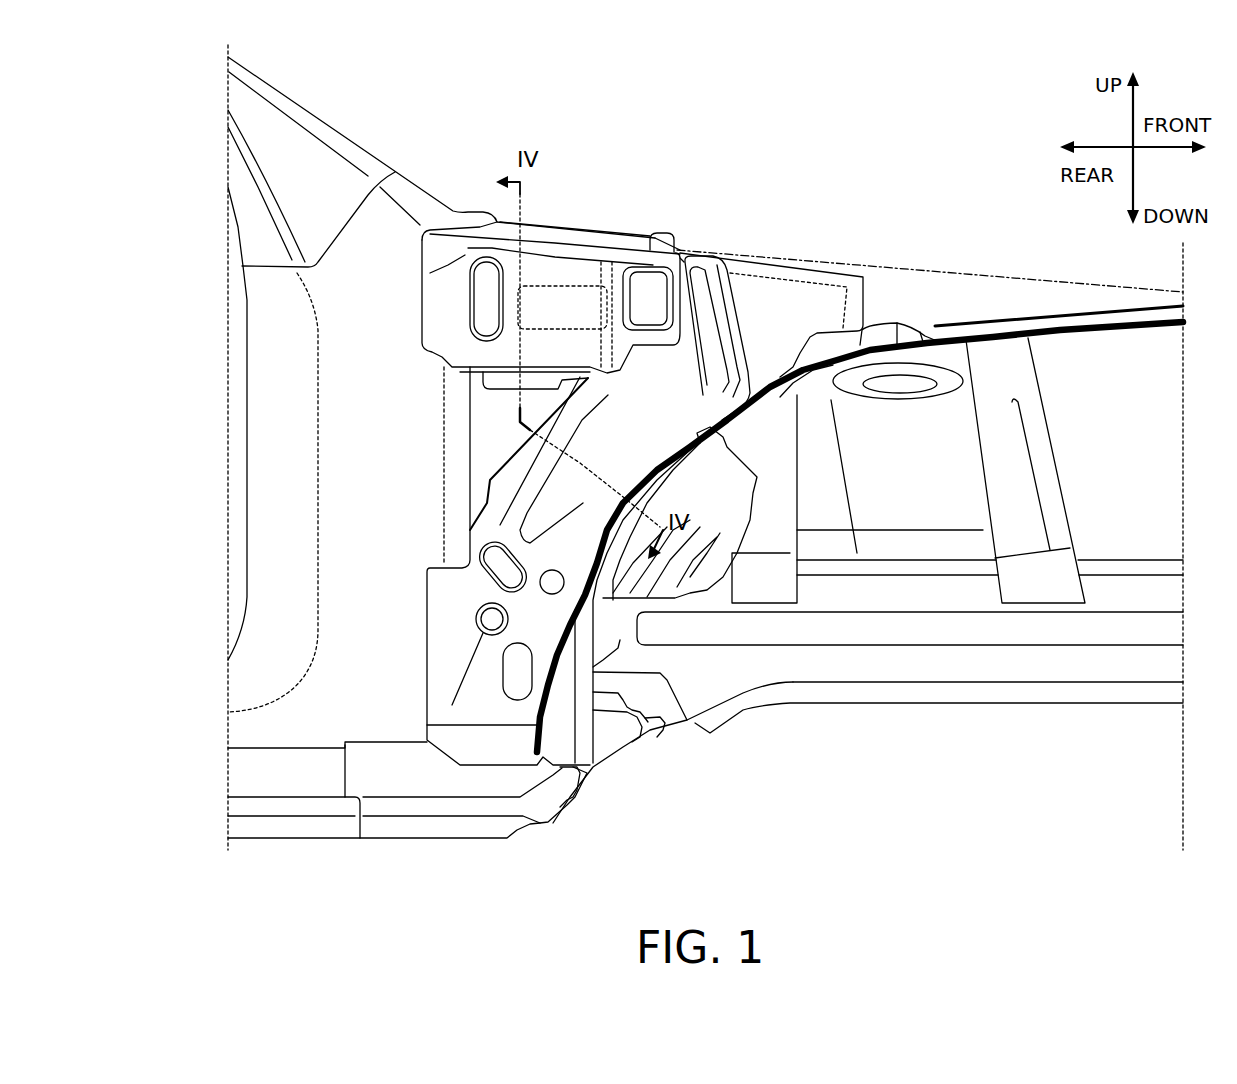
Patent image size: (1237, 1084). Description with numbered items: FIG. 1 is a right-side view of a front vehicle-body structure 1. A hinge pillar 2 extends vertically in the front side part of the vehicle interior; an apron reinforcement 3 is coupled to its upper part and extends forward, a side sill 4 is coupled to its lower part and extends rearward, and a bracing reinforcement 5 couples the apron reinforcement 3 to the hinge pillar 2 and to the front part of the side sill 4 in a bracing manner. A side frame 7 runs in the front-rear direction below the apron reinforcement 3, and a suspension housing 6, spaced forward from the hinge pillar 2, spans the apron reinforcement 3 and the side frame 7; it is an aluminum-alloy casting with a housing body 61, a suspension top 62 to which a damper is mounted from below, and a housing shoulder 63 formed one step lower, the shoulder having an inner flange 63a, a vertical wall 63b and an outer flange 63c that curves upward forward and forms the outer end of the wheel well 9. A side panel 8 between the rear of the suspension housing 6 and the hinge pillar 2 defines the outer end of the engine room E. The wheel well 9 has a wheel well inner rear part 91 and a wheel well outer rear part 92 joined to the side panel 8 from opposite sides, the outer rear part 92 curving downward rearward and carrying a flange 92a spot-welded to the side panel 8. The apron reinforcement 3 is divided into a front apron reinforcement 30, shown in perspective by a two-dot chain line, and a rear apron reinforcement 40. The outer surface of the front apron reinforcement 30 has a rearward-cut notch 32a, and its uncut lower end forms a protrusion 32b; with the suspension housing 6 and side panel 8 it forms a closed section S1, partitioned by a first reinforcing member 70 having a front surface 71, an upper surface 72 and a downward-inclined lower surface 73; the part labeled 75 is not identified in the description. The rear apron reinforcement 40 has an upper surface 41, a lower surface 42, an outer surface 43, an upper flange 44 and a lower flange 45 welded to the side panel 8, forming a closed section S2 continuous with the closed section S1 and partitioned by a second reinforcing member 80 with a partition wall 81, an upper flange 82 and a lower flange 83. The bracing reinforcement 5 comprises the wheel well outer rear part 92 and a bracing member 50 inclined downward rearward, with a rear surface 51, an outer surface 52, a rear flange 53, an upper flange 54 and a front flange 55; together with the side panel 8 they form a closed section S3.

The front vehicle-body structure 1 is at (795, 191).
The hinge pillar 2 is at (262, 603).
The apron reinforcement 3 is at (767, 181).
The side sill 4 is at (300, 822).
The bracing reinforcement 5 is at (378, 472).
The suspension housing 6 is at (1048, 445).
The side frame 7 is at (967, 660).
The side panel 8 is at (817, 293).
The wheel well 9 is at (913, 596).
The front apron reinforcement 30 is at (787, 263).
The notch 32a is at (703, 368).
The protrusion 32b is at (710, 407).
The rear apron reinforcement 40 is at (650, 240).
The upper surface 41 is at (540, 240).
The lower surface 42 is at (500, 373).
The outer surface 43 is at (448, 288).
The upper flange 44 is at (645, 233).
The lower flange 45 is at (497, 370).
The bracing member 50 is at (507, 475).
The rear surface 51 is at (527, 480).
The outer surface 52 is at (453, 607).
The rear flange 53 is at (540, 452).
The upper flange 54 is at (560, 470).
The front flange 55 is at (535, 722).
The housing body 61 is at (1043, 410).
The suspension top 62 is at (880, 392).
The housing shoulder 63 is at (900, 262).
The inner flange 63a is at (957, 327).
The vertical wall 63b is at (990, 327).
The outer flange 63c is at (1017, 323).
The first reinforcing member 70 is at (740, 350).
The front surface 71 is at (742, 375).
The upper surface 72 is at (672, 257).
The lower surface 73 is at (723, 433).
The outer wall 75 is at (723, 307).
The second reinforcing member 80 is at (600, 315).
The partition wall 81 is at (600, 277).
The upper flange 82 is at (632, 242).
The lower flange 83 is at (607, 353).
The wheel well inner rear part 91 is at (676, 579).
The wheel well outer rear part 92 is at (600, 540).
The flange 92a is at (587, 750).
The engine room E is at (895, 181).
The closed section S1 is at (880, 293).
The closed section S2 is at (573, 223).
The closed section S3 is at (467, 552).